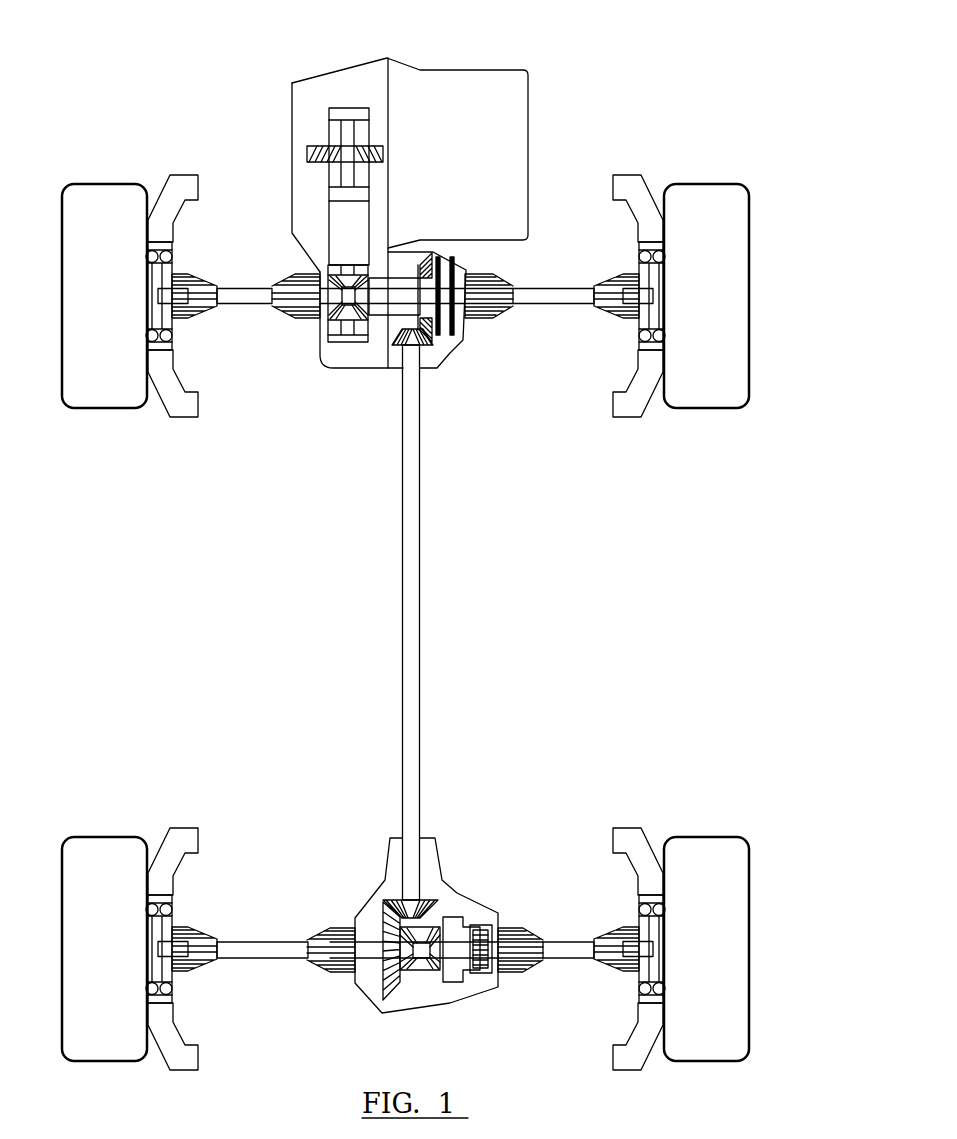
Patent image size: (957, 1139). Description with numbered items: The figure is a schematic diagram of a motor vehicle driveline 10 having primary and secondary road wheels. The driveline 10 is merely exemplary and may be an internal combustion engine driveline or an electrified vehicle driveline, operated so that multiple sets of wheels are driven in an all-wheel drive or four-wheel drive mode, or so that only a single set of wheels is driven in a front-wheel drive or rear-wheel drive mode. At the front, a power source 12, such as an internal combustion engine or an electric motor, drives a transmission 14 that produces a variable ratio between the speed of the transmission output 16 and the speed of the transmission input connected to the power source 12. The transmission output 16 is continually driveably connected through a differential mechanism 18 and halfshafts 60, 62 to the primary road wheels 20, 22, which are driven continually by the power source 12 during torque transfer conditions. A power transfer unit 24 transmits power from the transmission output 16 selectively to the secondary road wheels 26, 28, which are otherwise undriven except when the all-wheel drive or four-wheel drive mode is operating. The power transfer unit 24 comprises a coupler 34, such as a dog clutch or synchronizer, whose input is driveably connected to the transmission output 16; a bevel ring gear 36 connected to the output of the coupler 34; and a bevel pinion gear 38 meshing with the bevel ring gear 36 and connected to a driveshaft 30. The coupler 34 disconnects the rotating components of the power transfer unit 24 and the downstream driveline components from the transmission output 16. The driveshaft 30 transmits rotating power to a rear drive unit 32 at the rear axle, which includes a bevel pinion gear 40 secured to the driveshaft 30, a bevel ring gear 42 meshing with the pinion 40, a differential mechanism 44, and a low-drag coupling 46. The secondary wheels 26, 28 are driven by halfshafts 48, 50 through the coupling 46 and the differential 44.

The driveline 10 is at (612, 55).
The power source 12 is at (515, 115).
The transmission 14 is at (322, 92).
The transmission output 16 is at (393, 320).
The differential mechanism 18 is at (343, 312).
The primary road wheel 20 is at (722, 182).
The primary road wheel 22 is at (108, 182).
The power transfer unit 24 is at (443, 357).
The secondary road wheel 26 is at (720, 833).
The secondary road wheel 28 is at (110, 833).
The driveshaft 30 is at (420, 497).
The rear drive unit 32 is at (435, 867).
The coupler 34 is at (448, 322).
The bevel ring gear 36 is at (430, 268).
The bevel pinion gear 38 is at (422, 347).
The bevel pinion gear 40 is at (400, 897).
The bevel ring gear 42 is at (388, 983).
The differential mechanism 44 is at (423, 957).
The low-drag coupling 46 is at (455, 982).
The halfshaft 48 is at (577, 942).
The halfshaft 50 is at (248, 942).
The halfshaft 60 is at (577, 289).
The halfshaft 62 is at (248, 289).